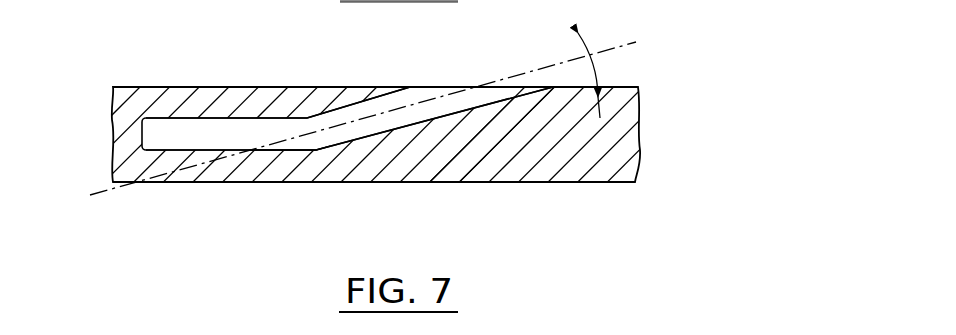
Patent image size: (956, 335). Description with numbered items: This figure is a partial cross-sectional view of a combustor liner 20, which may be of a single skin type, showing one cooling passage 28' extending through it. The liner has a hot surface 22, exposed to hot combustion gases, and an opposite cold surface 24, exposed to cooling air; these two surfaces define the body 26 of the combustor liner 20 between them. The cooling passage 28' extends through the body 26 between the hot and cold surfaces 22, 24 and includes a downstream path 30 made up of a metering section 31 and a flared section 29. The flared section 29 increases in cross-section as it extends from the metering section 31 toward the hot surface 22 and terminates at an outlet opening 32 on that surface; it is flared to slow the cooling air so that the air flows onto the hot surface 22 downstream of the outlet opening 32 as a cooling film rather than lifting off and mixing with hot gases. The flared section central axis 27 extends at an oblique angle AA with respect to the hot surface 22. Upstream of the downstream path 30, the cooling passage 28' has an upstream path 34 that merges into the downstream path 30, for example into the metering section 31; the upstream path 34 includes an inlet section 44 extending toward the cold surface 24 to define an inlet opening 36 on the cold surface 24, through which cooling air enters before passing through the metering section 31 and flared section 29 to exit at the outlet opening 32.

The combustor liner 20 is at (630, 87).
The hot surface 22 is at (340, 87).
The cold surface 24 is at (567, 183).
The body 26 is at (510, 170).
The flared section central axis 27 is at (601, 52).
The cooling passage 28' is at (347, 91).
The flared section 29 is at (350, 130).
The downstream path 30 is at (392, 118).
The metering section 31 is at (187, 123).
The outlet opening 32 is at (447, 88).
The upstream path 34 is at (232, 152).
The inlet opening 36 is at (225, 162).
The inlet section 44 is at (262, 160).
The oblique angle AA is at (605, 75).